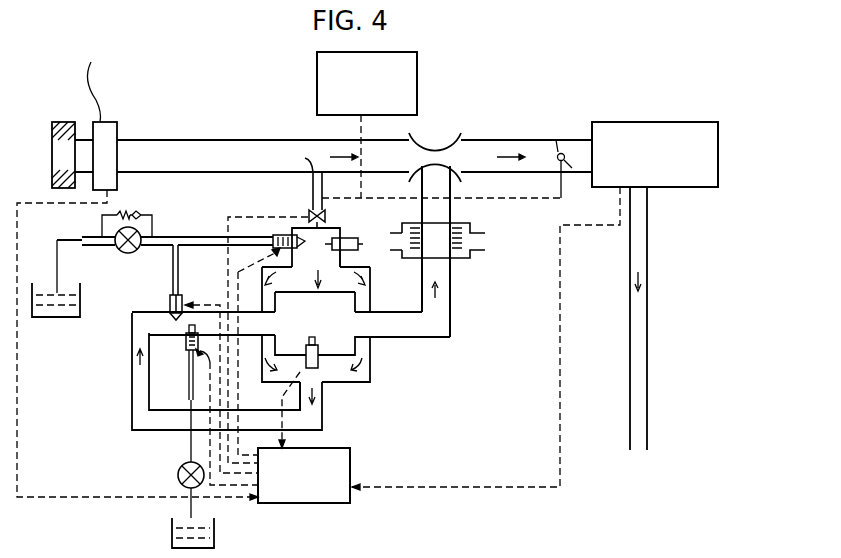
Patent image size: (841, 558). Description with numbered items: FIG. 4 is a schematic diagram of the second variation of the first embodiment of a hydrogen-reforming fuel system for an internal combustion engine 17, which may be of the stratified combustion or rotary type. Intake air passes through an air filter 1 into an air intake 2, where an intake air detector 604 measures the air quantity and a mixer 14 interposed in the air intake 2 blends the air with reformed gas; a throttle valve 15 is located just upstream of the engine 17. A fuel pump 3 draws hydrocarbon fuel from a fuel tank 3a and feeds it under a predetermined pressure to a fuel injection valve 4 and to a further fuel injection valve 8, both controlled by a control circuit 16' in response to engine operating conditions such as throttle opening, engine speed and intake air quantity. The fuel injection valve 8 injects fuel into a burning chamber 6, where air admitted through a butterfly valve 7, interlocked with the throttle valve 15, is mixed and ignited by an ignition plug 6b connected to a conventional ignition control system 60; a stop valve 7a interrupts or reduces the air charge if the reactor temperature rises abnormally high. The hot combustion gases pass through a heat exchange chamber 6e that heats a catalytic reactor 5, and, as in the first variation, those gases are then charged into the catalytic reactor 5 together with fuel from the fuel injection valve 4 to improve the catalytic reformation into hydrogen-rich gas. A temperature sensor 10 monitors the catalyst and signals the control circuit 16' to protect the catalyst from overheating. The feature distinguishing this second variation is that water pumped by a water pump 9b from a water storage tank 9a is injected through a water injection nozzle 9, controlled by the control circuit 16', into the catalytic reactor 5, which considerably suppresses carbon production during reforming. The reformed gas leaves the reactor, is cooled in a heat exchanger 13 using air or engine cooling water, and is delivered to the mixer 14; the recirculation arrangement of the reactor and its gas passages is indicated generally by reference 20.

The air filter 1 is at (63, 134).
The air intake 2 is at (263, 135).
The intake air detector 604 is at (152, 128).
The ignition control system 60 is at (339, 83).
The mixer 14 is at (436, 141).
The throttle valve 15 is at (558, 154).
The internal combustion engine 17 is at (655, 144).
The butterfly valve 7 is at (301, 184).
The stop valve 7a is at (334, 216).
The fuel injection valve 8 is at (280, 219).
The burning chamber 6 is at (316, 247).
The ignition plug 6b is at (362, 263).
The heat exchanger 13 is at (458, 240).
The fuel pump 3 is at (165, 250).
The fuel tank 3a is at (56, 298).
The fuel injection valve 4 is at (159, 282).
The recirculation system 20 is at (227, 352).
The catalytic reactor 5 is at (291, 324).
The water injection nozzle 9 is at (182, 393).
The temperature sensor 10 is at (328, 352).
The heat exchange chamber 6e is at (224, 397).
The water pump 9b is at (162, 475).
The water storage tank 9a is at (162, 518).
The control circuit 16' is at (383, 475).